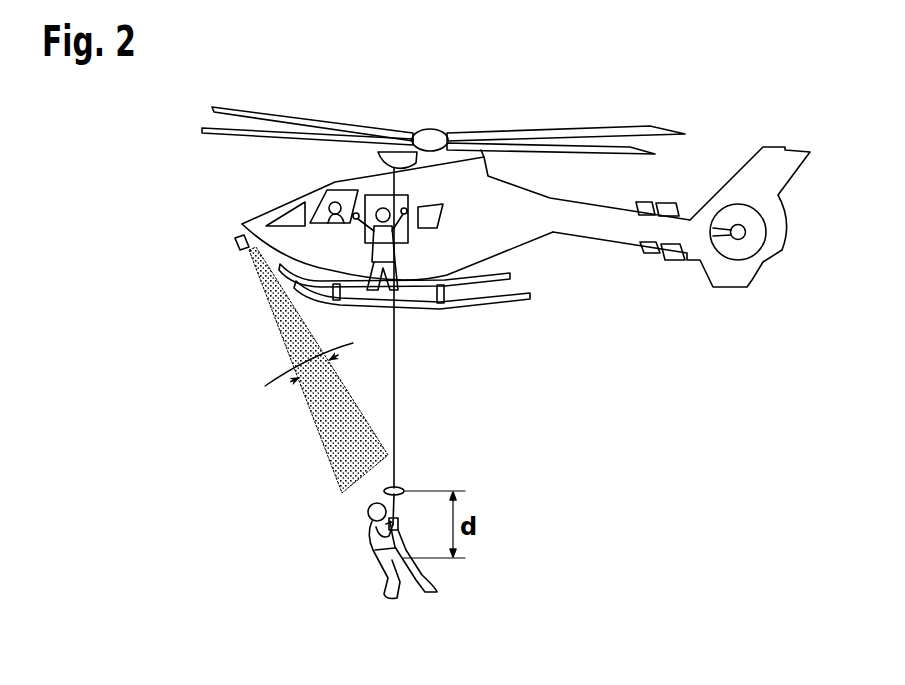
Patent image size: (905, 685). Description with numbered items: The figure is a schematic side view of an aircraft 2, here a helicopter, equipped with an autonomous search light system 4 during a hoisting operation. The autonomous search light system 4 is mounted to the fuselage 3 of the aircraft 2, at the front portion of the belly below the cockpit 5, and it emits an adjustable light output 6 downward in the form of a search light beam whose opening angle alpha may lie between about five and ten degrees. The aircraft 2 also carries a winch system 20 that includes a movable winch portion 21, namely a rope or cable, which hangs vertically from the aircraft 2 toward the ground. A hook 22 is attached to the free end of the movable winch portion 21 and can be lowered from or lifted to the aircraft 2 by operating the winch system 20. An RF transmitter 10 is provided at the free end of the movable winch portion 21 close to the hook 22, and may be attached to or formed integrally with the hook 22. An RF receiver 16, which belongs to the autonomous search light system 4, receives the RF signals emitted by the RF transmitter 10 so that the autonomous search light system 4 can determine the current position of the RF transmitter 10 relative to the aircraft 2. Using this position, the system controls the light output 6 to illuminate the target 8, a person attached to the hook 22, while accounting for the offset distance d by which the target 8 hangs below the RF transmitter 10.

The aircraft 2 is at (704, 99).
The fuselage 3 is at (568, 274).
The autonomous search light system 4 is at (226, 252).
The cockpit 5 is at (274, 178).
The light output 6 is at (288, 413).
The target 8 is at (347, 561).
The RF transmitter 10 is at (412, 480).
The RF receiver 16 is at (238, 238).
The winch system 20 is at (393, 160).
The movable winch portion 21 is at (409, 430).
The hook 22 is at (413, 527).